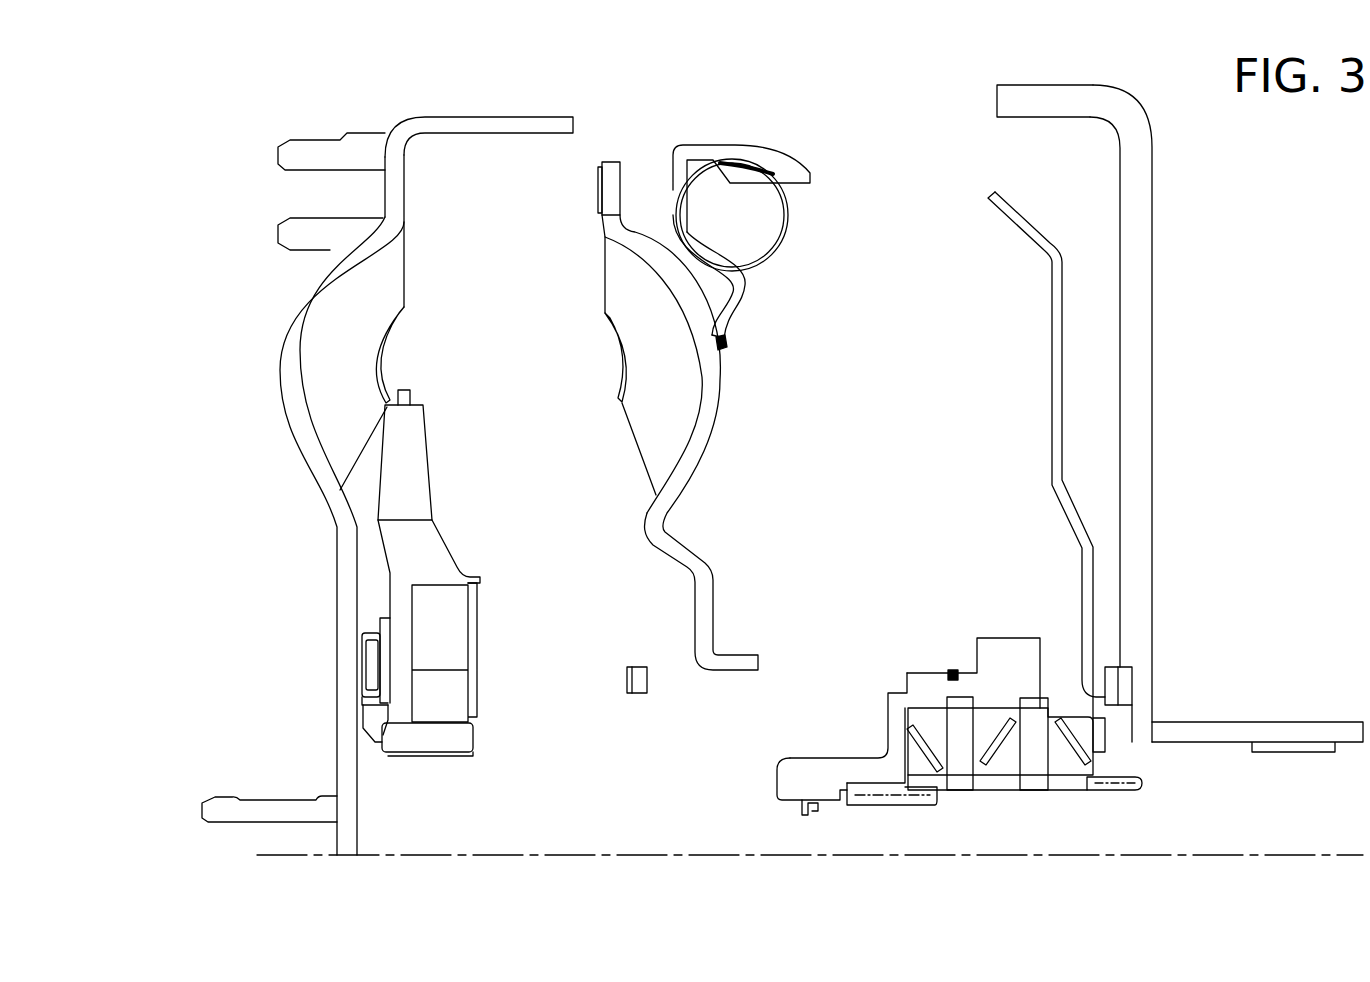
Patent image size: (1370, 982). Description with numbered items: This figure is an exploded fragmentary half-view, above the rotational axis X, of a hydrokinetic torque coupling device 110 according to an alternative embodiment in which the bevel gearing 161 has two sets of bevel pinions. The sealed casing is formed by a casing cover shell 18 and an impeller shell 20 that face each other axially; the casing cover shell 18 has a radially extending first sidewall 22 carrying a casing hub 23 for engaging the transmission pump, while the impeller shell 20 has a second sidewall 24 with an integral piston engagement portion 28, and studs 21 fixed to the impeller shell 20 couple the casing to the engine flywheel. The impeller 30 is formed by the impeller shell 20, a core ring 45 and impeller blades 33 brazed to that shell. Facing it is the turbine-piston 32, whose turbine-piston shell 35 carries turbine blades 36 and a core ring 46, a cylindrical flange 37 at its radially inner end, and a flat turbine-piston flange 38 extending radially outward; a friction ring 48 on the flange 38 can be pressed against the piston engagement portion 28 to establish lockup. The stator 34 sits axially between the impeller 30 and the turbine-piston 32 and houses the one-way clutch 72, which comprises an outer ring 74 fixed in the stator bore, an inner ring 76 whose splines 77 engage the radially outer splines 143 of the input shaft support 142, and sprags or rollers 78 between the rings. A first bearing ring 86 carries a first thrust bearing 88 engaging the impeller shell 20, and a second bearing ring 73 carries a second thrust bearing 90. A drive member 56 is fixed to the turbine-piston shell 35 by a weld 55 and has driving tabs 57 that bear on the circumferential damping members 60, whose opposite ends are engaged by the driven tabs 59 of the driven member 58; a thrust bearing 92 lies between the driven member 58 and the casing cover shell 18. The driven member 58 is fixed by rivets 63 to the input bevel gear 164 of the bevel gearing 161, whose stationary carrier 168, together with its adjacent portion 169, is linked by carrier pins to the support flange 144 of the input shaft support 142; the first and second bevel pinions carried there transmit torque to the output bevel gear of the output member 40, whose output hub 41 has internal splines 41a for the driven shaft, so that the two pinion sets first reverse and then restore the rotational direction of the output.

The impeller shell 20 is at (297, 480).
The impeller 30 is at (273, 375).
The second sidewall 24 is at (295, 300).
The piston engagement portion 28 is at (393, 186).
The studs 21 is at (322, 140).
The impeller blades 33 is at (320, 382).
The core ring 45 is at (383, 353).
The stator 34 is at (436, 494).
The one-way clutch 72 is at (410, 602).
The second bearing ring 73 is at (472, 630).
The outer ring 74 is at (424, 642).
The sprags or rollers 78 is at (424, 709).
The inner ring 76 is at (468, 738).
The splines 77 is at (428, 754).
The first bearing ring 86 is at (378, 626).
The first thrust bearing 88 is at (368, 668).
The turbine-piston 32 is at (712, 458).
The turbine-piston flange 38 is at (611, 162).
The friction ring 48 is at (600, 205).
The turbine-piston shell 35 is at (712, 412).
The turbine blades 36 is at (652, 367).
The cylindrical flange 37 is at (735, 662).
The core ring 46 is at (614, 363).
The damping members 60 is at (789, 238).
The driving tabs 57 is at (748, 185).
The drive member 56 is at (749, 285).
The weld 55 is at (728, 343).
The second thrust bearing 90 is at (627, 680).
The hydrokinetic torque coupling device 110 is at (1190, 214).
The casing cover shell 18 is at (1155, 384).
The first sidewall 22 is at (1140, 287).
The casing hub 23 is at (1332, 722).
The thrust bearing 92 is at (1125, 687).
The rivets 63 is at (1128, 730).
The input bevel gear 164 is at (1110, 755).
The carrier 168 is at (1142, 783).
The plate edge 169 is at (1138, 790).
The driven member 58 is at (1052, 400).
The driven tabs 59 is at (1006, 213).
The bevel gearing 161 is at (1062, 688).
The output member 40 is at (925, 790).
The support flange 144 is at (930, 683).
The radially outer splines 143 is at (805, 752).
The input shaft support 142 is at (785, 775).
The output hub 41 is at (873, 790).
The internal splines 41a is at (858, 806).